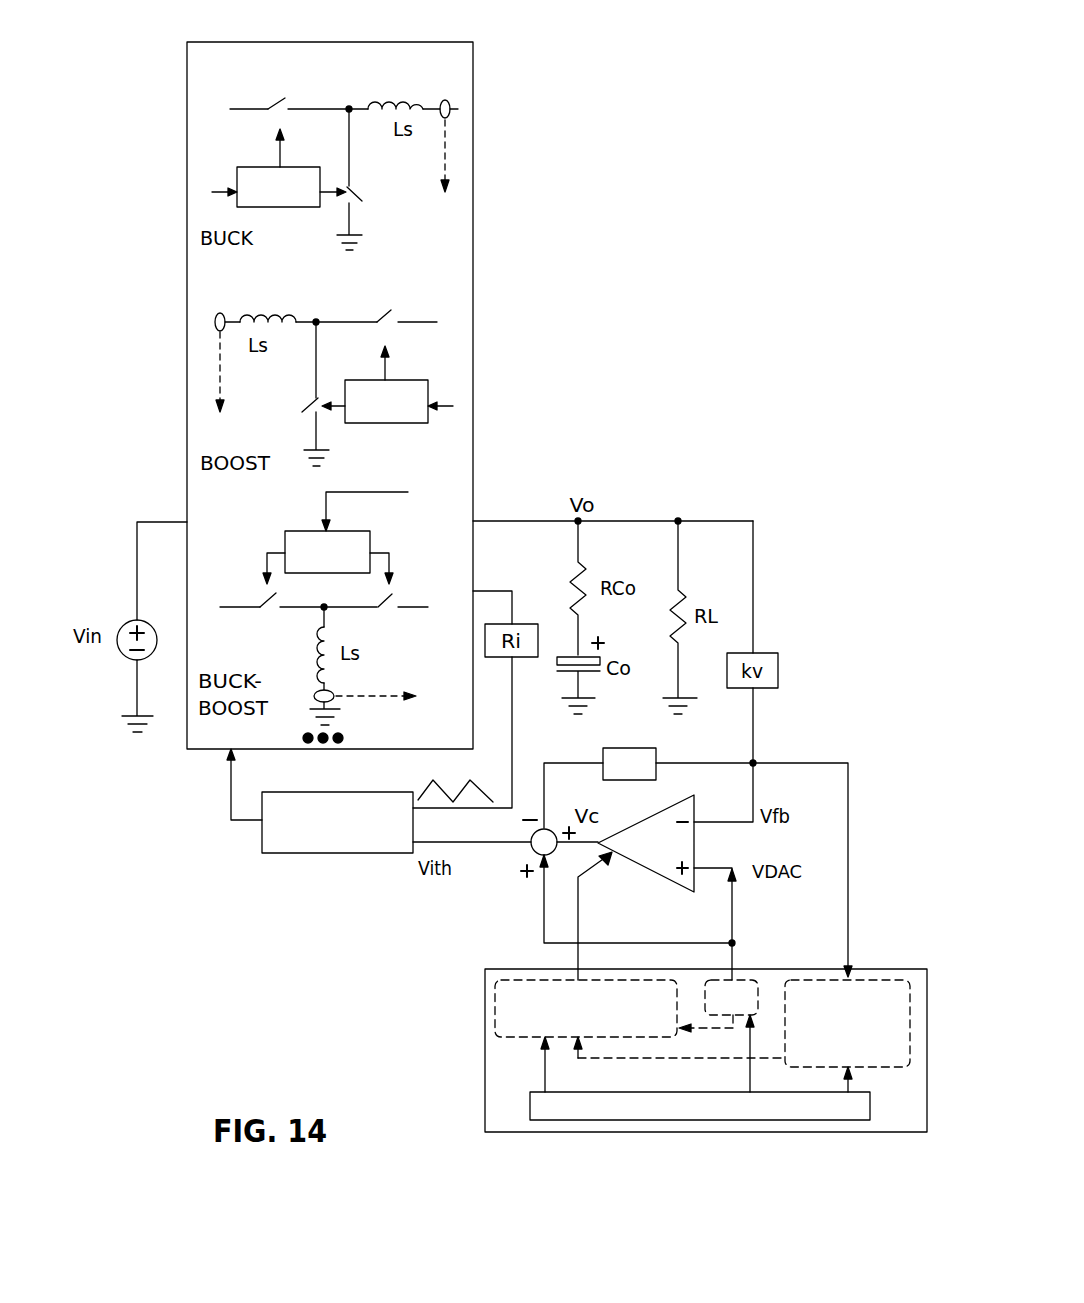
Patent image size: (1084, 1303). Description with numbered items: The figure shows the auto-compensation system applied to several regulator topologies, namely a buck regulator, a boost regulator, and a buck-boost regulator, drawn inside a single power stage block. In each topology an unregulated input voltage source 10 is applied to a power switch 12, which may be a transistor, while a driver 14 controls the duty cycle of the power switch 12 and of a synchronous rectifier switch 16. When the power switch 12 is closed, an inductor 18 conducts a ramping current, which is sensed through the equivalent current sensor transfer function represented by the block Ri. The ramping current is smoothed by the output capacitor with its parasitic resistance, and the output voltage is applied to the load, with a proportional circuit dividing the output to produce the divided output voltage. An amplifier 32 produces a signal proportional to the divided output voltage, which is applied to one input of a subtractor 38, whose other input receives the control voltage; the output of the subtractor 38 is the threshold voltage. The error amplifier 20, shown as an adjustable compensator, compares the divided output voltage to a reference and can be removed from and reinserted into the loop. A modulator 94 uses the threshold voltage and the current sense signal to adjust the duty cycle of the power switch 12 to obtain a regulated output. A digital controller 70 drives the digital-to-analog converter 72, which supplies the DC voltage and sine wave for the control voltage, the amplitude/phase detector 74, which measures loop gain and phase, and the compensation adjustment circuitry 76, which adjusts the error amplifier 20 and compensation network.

The input voltage source 10 is at (125, 622).
The power switch 12 is at (271, 100).
The driver 14 is at (261, 166).
The synchronous rectifier switch 16 is at (364, 193).
The inductor 18 is at (401, 99).
The error amplifier 20 is at (697, 838).
The amplifier 32 is at (636, 748).
The subtractor 38 is at (528, 852).
The digital controller 70 is at (528, 1110).
The digital-to-analog converter 72 is at (750, 980).
The amplitude/phase detector 74 is at (892, 980).
The compensation adjustment circuitry 76 is at (494, 1008).
The modulator 94 is at (292, 855).